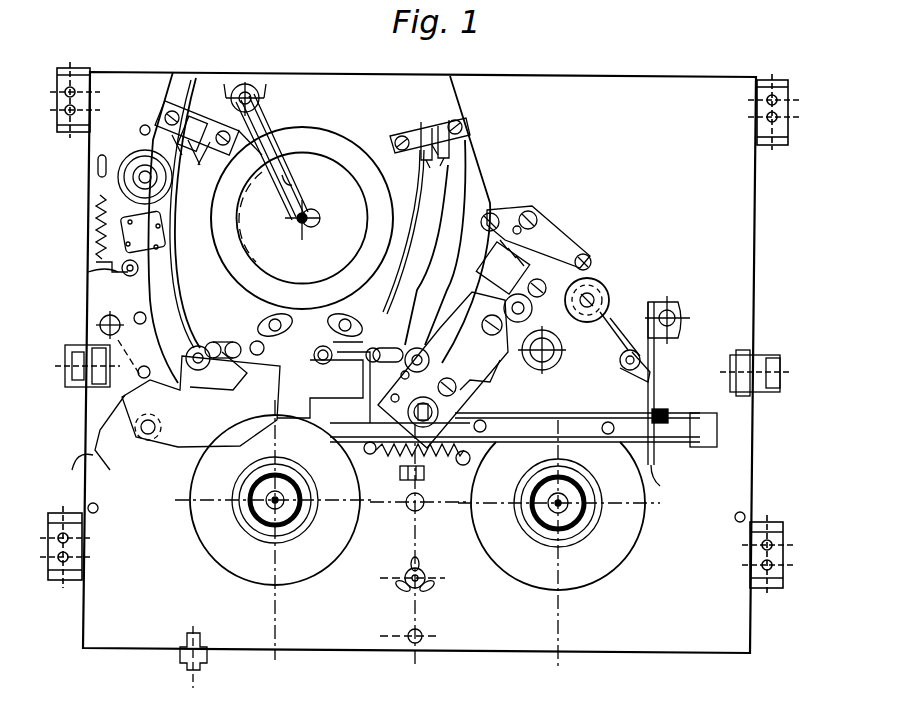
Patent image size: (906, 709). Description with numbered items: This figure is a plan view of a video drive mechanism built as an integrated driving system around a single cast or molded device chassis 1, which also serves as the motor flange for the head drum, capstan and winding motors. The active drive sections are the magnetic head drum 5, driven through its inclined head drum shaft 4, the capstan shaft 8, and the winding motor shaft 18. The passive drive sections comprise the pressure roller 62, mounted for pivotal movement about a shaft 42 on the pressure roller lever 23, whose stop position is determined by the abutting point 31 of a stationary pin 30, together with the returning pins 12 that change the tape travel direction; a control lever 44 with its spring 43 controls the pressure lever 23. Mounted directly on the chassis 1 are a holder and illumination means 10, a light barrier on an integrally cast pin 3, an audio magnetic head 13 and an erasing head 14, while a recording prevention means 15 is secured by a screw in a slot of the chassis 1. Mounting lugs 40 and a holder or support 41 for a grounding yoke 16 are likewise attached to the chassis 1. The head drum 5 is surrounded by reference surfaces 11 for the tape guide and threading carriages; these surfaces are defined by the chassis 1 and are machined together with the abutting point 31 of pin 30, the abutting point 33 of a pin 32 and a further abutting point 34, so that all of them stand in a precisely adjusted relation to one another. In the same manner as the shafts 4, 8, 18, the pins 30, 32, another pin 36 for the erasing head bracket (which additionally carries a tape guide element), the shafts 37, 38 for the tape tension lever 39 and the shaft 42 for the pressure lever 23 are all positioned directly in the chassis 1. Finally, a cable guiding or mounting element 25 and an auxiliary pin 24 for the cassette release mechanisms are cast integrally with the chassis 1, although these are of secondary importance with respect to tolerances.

The device chassis 1 is at (640, 82).
The integrally cast pin 3 is at (80, 388).
The head drum shaft 4 is at (314, 210).
The magnetic head drum 5 is at (312, 126).
The capstan shaft 8 is at (265, 512).
The holder and illumination means 10 is at (478, 395).
The reference surfaces 11 is at (458, 195).
The returning pins 12 is at (215, 343).
The audio magnetic head 13 is at (552, 255).
The erasing head 14 is at (100, 234).
The recording prevention means 15 is at (205, 658).
The grounding yoke 16 is at (292, 180).
The winding motor shaft 18 is at (548, 518).
The pressure roller lever 23 is at (630, 320).
The auxiliary pin 24 is at (420, 575).
The cable guiding or mounting element 25 is at (426, 478).
The stationary pin 30 is at (618, 360).
The abutting point 31 is at (622, 380).
The pin 32 is at (322, 363).
The abutting point 33 is at (332, 364).
The abutting point 34 is at (422, 630).
The pin for erasing head bracket 36 is at (92, 282).
The shaft 37 is at (100, 327).
The shaft 38 is at (142, 440).
The tape tension lever 39 is at (176, 445).
The mounting lugs 40 is at (75, 82).
The holder or support 41 is at (257, 92).
The shaft 42 is at (670, 480).
The spring 43 is at (666, 410).
The control lever 44 is at (718, 433).
The pressure roller 62 is at (602, 290).